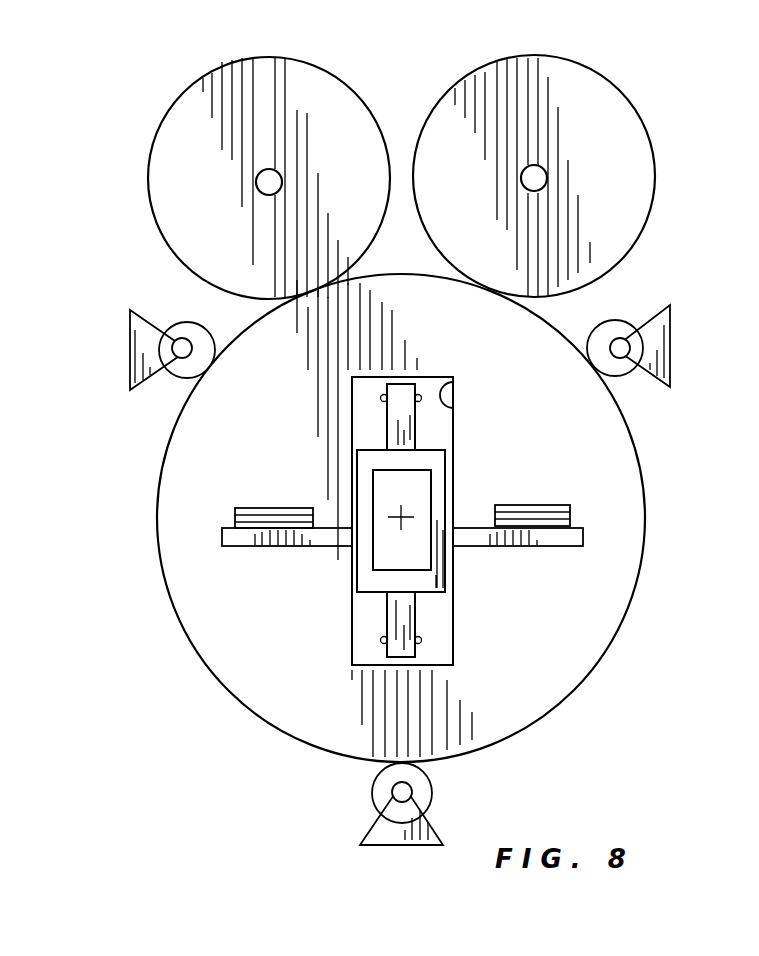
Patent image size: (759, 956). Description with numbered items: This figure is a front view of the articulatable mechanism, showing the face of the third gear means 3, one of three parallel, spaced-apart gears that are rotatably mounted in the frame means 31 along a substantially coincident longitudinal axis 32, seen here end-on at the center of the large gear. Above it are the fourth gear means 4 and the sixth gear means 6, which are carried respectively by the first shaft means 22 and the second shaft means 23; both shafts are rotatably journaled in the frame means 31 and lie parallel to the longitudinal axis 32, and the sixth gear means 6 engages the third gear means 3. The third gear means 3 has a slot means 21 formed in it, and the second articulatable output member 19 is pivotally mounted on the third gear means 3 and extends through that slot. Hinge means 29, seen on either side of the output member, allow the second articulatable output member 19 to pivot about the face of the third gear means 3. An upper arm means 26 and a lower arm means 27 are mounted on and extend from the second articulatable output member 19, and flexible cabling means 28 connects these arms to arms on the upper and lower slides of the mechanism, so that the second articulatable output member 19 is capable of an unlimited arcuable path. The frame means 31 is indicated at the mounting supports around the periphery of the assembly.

The third gear means 3 is at (487, 750).
The fourth gear means 4 is at (312, 72).
The sixth gear means 6 is at (596, 70).
The first shaft means 22 is at (270, 168).
The second shaft means 23 is at (548, 180).
The frame means 31 is at (191, 324).
The second articulatable output member 19 is at (357, 464).
The upper arm means 26 is at (403, 412).
The lower arm means 27 is at (410, 622).
The flexible cabling means 28 is at (419, 394).
The slot means 21 is at (452, 385).
The hinge means 29 is at (273, 508).
The longitudinal axis 32 is at (404, 512).